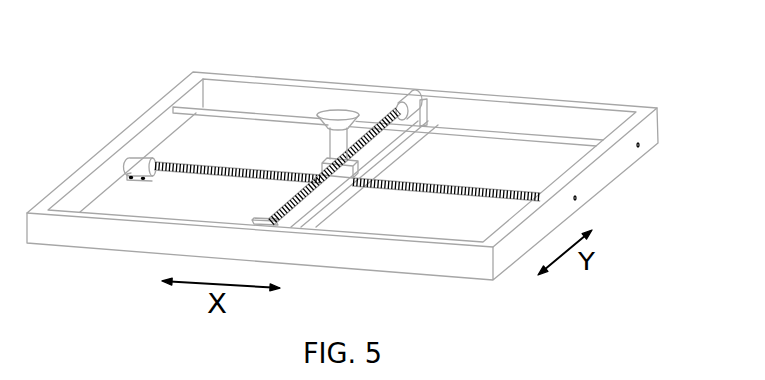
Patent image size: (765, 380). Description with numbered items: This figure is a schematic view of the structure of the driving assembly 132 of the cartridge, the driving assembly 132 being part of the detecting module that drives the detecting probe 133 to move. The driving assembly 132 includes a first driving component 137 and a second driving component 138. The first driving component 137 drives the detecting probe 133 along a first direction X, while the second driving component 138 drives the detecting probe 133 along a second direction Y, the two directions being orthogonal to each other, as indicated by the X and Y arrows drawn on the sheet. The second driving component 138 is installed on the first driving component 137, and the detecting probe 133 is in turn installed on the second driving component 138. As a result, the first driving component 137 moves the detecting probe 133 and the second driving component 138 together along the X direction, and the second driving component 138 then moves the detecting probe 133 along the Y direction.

The driving assembly 132 is at (478, 96).
The detecting probe 133 is at (338, 118).
The first driving component 137 is at (180, 167).
The second driving component 138 is at (395, 112).